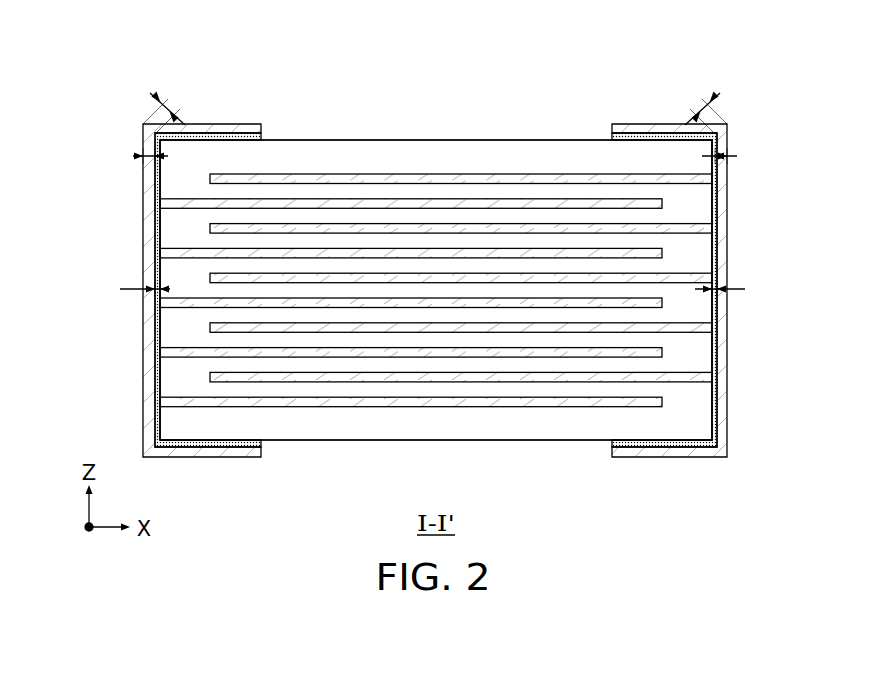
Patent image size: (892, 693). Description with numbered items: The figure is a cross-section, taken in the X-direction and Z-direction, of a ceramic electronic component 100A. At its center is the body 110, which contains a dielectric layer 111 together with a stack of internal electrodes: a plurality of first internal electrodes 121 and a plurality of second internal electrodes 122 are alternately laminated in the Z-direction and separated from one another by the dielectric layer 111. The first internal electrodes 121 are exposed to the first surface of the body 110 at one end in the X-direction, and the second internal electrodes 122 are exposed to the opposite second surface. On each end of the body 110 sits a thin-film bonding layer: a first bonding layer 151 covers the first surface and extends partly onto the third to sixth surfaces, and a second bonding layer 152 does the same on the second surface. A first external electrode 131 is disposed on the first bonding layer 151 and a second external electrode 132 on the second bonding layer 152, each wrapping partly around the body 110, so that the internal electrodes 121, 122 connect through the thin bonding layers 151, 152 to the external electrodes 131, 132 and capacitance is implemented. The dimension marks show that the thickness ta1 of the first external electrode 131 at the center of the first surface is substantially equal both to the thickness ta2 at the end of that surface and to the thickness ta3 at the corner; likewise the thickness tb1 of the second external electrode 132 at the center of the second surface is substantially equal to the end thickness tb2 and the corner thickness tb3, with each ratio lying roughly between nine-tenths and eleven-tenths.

The ceramic electronic component 100A is at (586, 90).
The body 110 is at (500, 140).
The dielectric layer 111 is at (352, 162).
The first internal electrodes 121 is at (331, 400).
The second internal electrodes 122 is at (540, 376).
The first external electrode 131 is at (226, 127).
The second external electrode 132 is at (648, 127).
The first bonding layer 151 is at (207, 448).
The second bonding layer 152 is at (665, 448).
The thickness of the first external electrode at the center of the first surface ta1 is at (152, 288).
The thickness of the first external electrode at the end of the first surface ta2 is at (150, 153).
The thickness of the first external electrode at the corner ta3 is at (180, 117).
The thickness of the second external electrode at the center of the second surface tb1 is at (718, 288).
The thickness of the second external electrode at the end of the second surface tb2 is at (720, 153).
The thickness of the second external electrode at the corner tb3 is at (697, 116).